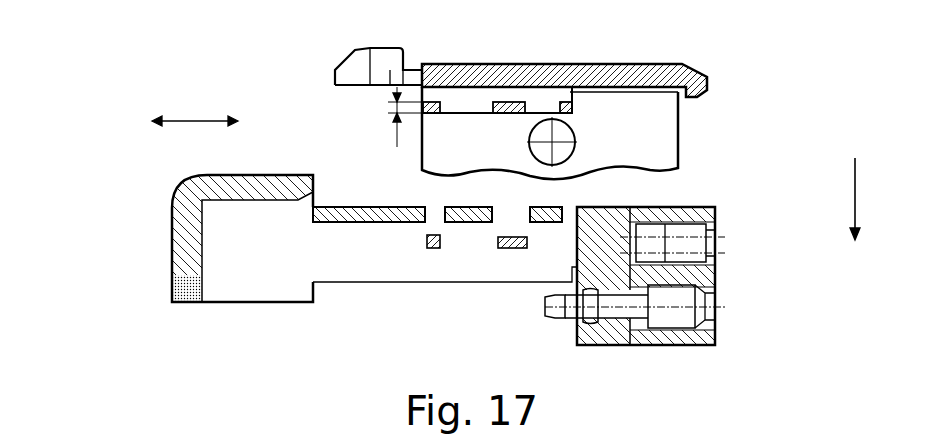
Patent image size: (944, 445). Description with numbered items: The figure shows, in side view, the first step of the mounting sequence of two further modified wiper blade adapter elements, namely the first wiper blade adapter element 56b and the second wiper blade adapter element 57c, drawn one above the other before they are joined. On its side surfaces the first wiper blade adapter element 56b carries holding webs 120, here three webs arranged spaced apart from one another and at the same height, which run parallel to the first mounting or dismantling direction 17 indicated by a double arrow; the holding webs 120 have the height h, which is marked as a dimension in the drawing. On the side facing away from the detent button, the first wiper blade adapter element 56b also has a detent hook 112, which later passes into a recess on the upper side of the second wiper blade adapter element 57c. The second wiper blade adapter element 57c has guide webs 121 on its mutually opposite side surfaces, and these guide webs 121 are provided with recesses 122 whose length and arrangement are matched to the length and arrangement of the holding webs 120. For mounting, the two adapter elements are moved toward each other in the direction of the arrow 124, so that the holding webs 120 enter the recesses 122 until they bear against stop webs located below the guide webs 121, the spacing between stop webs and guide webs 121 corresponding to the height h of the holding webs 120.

The first mounting and dismantling direction 17 is at (195, 121).
The holding webs 120 is at (436, 100).
The detent hook 112 is at (692, 78).
The first wiper blade adapter element 56b is at (658, 133).
The height of the holding webs h is at (392, 107).
The guide webs 121 is at (367, 207).
The recesses 122 is at (430, 220).
The arrow 124 is at (853, 185).
The second wiper blade adapter element 57c is at (273, 277).